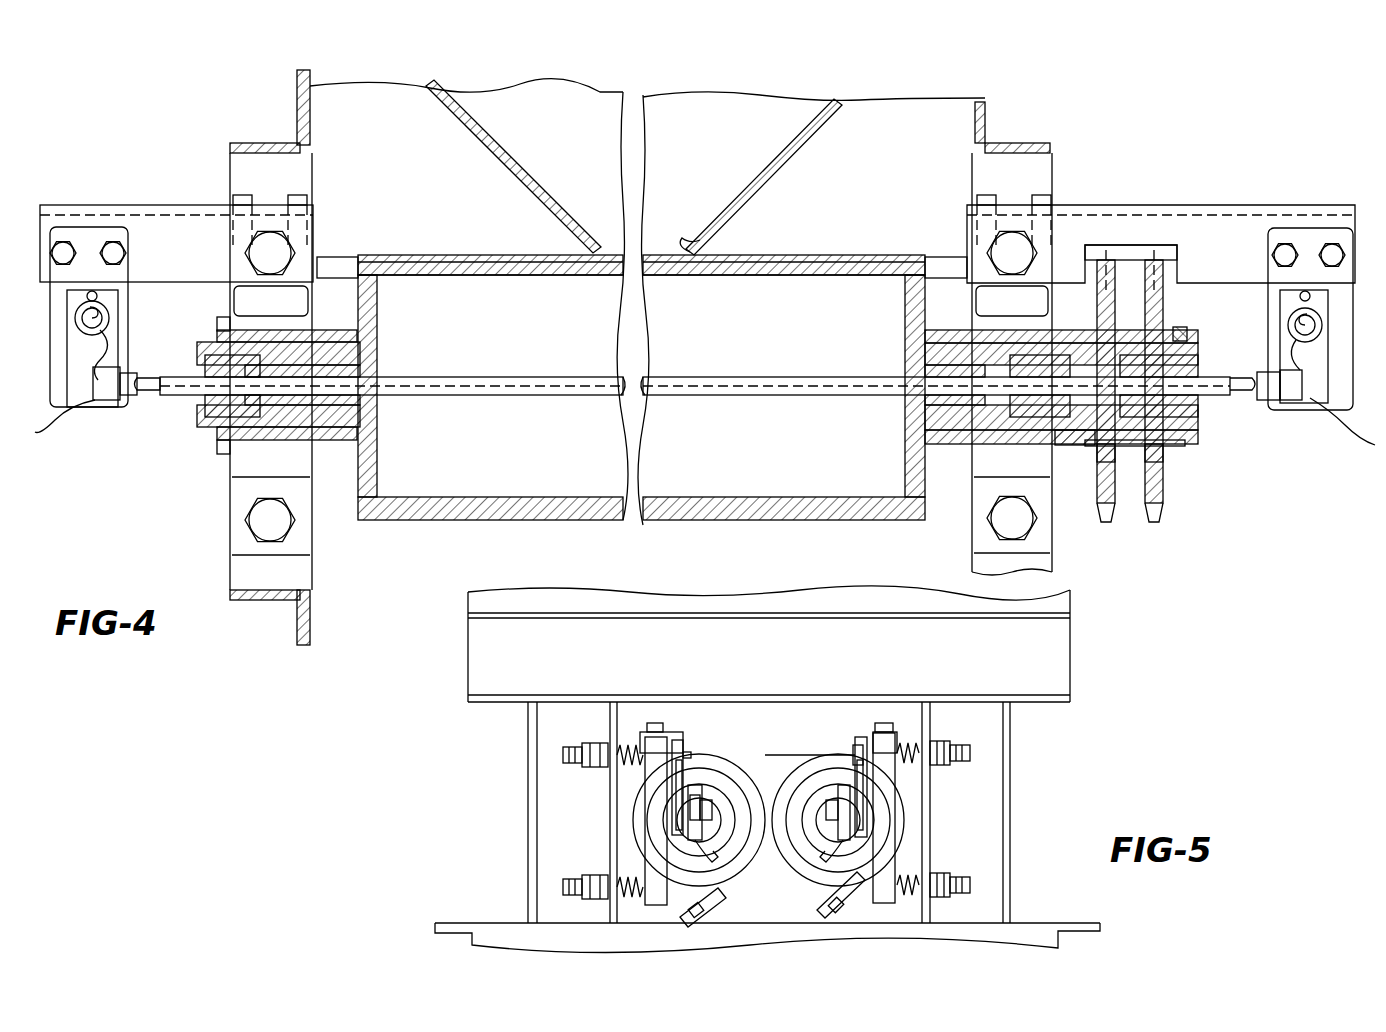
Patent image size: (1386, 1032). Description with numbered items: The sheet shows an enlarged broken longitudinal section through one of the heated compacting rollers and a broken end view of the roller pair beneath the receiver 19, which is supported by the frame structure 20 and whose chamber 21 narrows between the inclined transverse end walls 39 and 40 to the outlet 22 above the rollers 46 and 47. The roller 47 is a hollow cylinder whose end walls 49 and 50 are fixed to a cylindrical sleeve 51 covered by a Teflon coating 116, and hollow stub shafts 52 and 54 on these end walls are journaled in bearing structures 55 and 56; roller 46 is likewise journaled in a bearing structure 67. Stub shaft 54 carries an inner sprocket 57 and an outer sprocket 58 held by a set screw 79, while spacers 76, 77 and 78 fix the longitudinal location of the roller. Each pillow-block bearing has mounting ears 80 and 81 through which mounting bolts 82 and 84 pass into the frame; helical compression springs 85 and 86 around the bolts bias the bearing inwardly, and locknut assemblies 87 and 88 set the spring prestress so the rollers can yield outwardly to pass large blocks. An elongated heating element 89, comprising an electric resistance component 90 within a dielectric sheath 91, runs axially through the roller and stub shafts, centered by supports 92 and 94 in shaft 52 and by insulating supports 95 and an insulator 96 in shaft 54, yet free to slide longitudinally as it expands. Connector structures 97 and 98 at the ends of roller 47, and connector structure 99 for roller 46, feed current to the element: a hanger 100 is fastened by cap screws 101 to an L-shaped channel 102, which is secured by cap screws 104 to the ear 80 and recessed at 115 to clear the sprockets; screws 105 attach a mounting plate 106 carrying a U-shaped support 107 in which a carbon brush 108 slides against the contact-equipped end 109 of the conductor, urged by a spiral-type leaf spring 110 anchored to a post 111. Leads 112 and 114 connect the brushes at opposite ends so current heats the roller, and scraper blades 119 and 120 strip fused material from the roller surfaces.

In FIG. 4, the receiver 19 is at (305, 102).
In FIG. 5, the receiver 19 is at (468, 604).
In FIG. 5, the frame structure 20 is at (528, 810).
In FIG. 4, the chamber 21 is at (490, 100).
In FIG. 4, the outlet 22 is at (700, 242).
In FIG. 4, the transverse end wall 39 is at (513, 163).
In FIG. 4, the transverse end wall 40 is at (762, 180).
In FIG. 5, the roller 46 is at (712, 755).
In FIG. 4, the roller 47 is at (398, 255).
In FIG. 5, the roller 47 is at (825, 755).
In FIG. 4, the end wall 49 is at (376, 314).
In FIG. 4, the end wall 50 is at (905, 288).
In FIG. 4, the cylindrical sleeve 51 is at (484, 272).
In FIG. 4, the hollow stub shaft 52 is at (355, 432).
In FIG. 4, the hollow stub shaft 54 is at (925, 442).
In FIG. 4, the bearing structure 55 is at (230, 467).
In FIG. 5, the bearing structure 55 is at (823, 757).
In FIG. 4, the bearing structure 56 is at (988, 474).
In FIG. 4, the inner sprocket 57 is at (1106, 514).
In FIG. 4, the outer sprocket 58 is at (1156, 514).
In FIG. 5, the bearing structure 67 is at (727, 800).
In FIG. 4, the spacer 76 is at (350, 338).
In FIG. 4, the spacer 77 is at (925, 337).
In FIG. 4, the spacer 78 is at (1078, 446).
In FIG. 4, the set screw 79 is at (1182, 326).
In FIG. 4, the mounting ear 80 is at (230, 290).
In FIG. 5, the mounting ear 80 is at (900, 745).
In FIG. 4, the mounting ear 81 is at (232, 540).
In FIG. 5, the mounting ear 81 is at (652, 905).
In FIG. 4, the mounting bolt 82 is at (248, 253).
In FIG. 5, the mounting bolt 82 is at (563, 756).
In FIG. 4, the mounting bolt 84 is at (248, 518).
In FIG. 5, the mounting bolt 84 is at (563, 887).
In FIG. 5, the helical compression spring 85 is at (906, 768).
In FIG. 5, the helical compression spring 86 is at (910, 875).
In FIG. 5, the locknut assembly 87 is at (922, 758).
In FIG. 5, the locknut assembly 88 is at (970, 880).
In FIG. 4, the heating element 89 is at (505, 395).
In FIG. 4, the electric resistance component 90 is at (632, 395).
In FIG. 4, the dielectric sheath 91 is at (740, 393).
In FIG. 4, the support 92 is at (210, 425).
In FIG. 4, the support 94 is at (335, 408).
In FIG. 4, the insulating support 95 is at (1165, 432).
In FIG. 4, the insulator 96 is at (925, 410).
In FIG. 4, the connector structure 97 is at (46, 309).
In FIG. 5, the connector structure 97 is at (866, 739).
In FIG. 4, the connector structure 98 is at (1328, 438).
In FIG. 5, the connector structure 99 is at (695, 745).
In FIG. 4, the hanger 100 is at (103, 227).
In FIG. 5, the hanger 100 is at (676, 790).
In FIG. 4, the cap screw 101 is at (64, 243).
In FIG. 4, the L-shaped channel 102 is at (173, 205).
In FIG. 5, the L-shaped channel 102 is at (648, 732).
In FIG. 4, the cap screw 104 is at (242, 195).
In FIG. 5, the cap screw 104 is at (657, 723).
In FIG. 4, the screw 105 is at (1300, 293).
In FIG. 4, the mounting plate 106 is at (67, 352).
In FIG. 4, the U-shaped support 107 is at (128, 372).
In FIG. 4, the carbon brush 108 is at (130, 402).
In FIG. 4, the contact-equipped end 109 is at (150, 376).
In FIG. 4, the spiral-type leaf spring 110 is at (73, 326).
In FIG. 5, the spiral-type leaf spring 110 is at (690, 808).
In FIG. 4, the post 111 is at (1288, 326).
In FIG. 4, the electric lead 112 is at (1348, 443).
In FIG. 4, the conductor 114 is at (50, 428).
In FIG. 4, the recess 115 is at (1145, 245).
In FIG. 4, the Teflon coating 116 is at (440, 256).
In FIG. 5, the scraper blade 119 is at (755, 908).
In FIG. 5, the scraper blade 120 is at (822, 895).